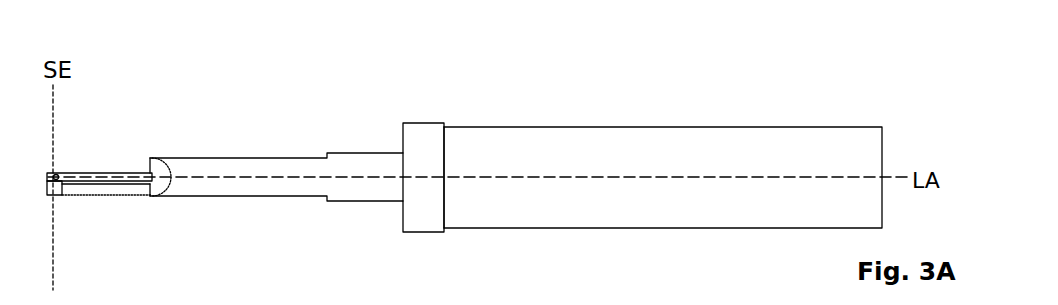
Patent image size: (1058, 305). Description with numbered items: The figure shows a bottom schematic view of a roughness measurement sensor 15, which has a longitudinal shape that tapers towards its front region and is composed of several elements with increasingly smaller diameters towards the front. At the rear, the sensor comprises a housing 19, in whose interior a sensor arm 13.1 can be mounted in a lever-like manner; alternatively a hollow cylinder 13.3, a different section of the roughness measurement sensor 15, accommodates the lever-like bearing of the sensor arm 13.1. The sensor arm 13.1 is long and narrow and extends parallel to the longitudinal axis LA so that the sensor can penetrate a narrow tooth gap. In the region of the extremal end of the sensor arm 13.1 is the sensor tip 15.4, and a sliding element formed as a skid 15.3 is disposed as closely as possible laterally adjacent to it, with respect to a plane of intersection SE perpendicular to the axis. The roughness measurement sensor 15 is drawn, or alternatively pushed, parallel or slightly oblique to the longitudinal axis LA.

The roughness measurement sensor 15 is at (403, 56).
The sliding element (skid) 15.3 is at (55, 198).
The sensor tip 15.4 is at (54, 167).
The sensor arm 13.1 is at (136, 165).
The hollow cylinder 13.3 is at (237, 155).
The housing 19 is at (615, 132).